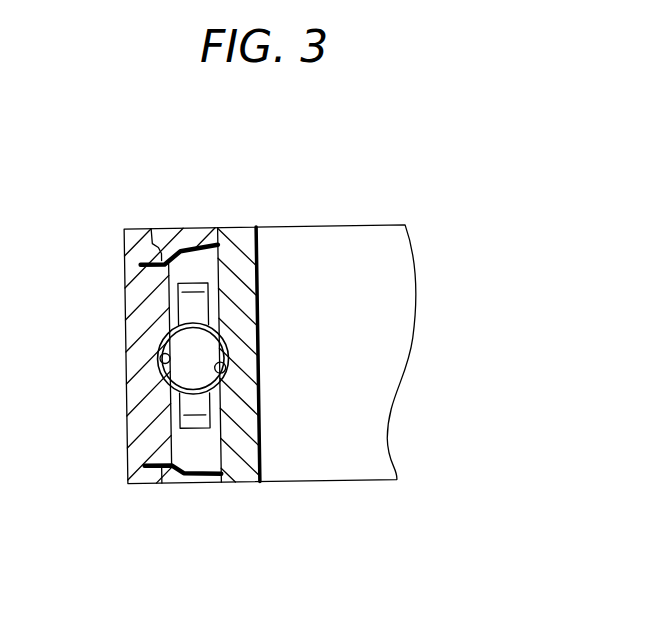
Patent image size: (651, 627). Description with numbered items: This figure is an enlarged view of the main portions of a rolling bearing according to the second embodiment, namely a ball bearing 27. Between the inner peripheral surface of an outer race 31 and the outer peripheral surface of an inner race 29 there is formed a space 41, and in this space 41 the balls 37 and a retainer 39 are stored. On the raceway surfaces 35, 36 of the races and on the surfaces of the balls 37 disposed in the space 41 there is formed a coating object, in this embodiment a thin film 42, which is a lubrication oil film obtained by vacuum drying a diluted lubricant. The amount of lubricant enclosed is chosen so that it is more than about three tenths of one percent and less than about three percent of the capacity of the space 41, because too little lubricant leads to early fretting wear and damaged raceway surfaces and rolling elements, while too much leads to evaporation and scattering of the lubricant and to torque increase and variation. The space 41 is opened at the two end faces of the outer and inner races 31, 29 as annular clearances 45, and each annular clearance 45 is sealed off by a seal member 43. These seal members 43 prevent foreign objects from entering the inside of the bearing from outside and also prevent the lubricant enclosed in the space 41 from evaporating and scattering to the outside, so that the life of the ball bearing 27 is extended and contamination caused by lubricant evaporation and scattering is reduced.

The ball bearing 27 is at (458, 227).
The inner race 29 is at (258, 275).
The outer race 31 is at (123, 280).
The raceway surface 35 is at (163, 356).
The raceway surface 36 is at (258, 378).
The balls 37 is at (208, 348).
The retainer 39 is at (180, 423).
The space 41 is at (205, 450).
The thin film 42 is at (213, 315).
The seal member 43 is at (186, 219).
The annular clearance 45 is at (162, 227).